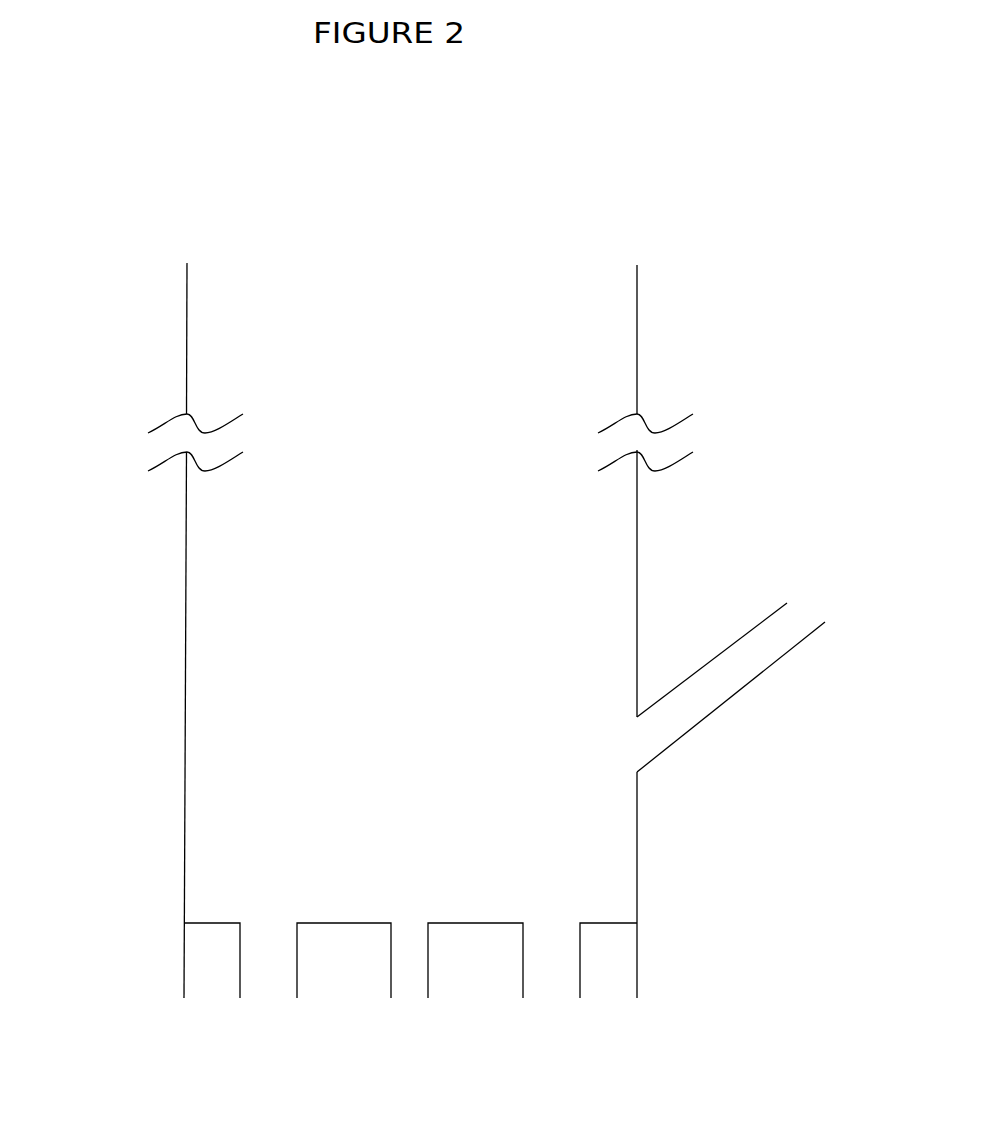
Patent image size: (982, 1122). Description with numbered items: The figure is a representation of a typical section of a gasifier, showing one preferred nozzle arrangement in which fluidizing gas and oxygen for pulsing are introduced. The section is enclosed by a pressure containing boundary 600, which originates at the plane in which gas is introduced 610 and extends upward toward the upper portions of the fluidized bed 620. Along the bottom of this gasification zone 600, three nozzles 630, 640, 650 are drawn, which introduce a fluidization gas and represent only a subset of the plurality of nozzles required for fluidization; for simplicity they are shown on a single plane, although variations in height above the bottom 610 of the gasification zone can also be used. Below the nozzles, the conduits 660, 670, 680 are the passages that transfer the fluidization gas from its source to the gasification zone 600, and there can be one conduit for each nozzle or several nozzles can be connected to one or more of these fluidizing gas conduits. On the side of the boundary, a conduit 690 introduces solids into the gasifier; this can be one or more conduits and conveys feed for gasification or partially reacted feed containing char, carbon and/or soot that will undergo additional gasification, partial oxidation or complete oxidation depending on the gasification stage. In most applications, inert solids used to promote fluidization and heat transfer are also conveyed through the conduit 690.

The pressure containing boundary 600 is at (170, 658).
The plane in which gas is introduced 610 is at (617, 913).
The fluidized bed 620 is at (167, 352).
The nozzle 630 is at (269, 937).
The nozzle 640 is at (402, 932).
The nozzle 650 is at (547, 942).
The fluidization gas conduit 660 is at (238, 965).
The fluidization gas conduit 670 is at (385, 958).
The fluidization gas conduit 680 is at (513, 950).
The solids conduit 690 is at (703, 732).